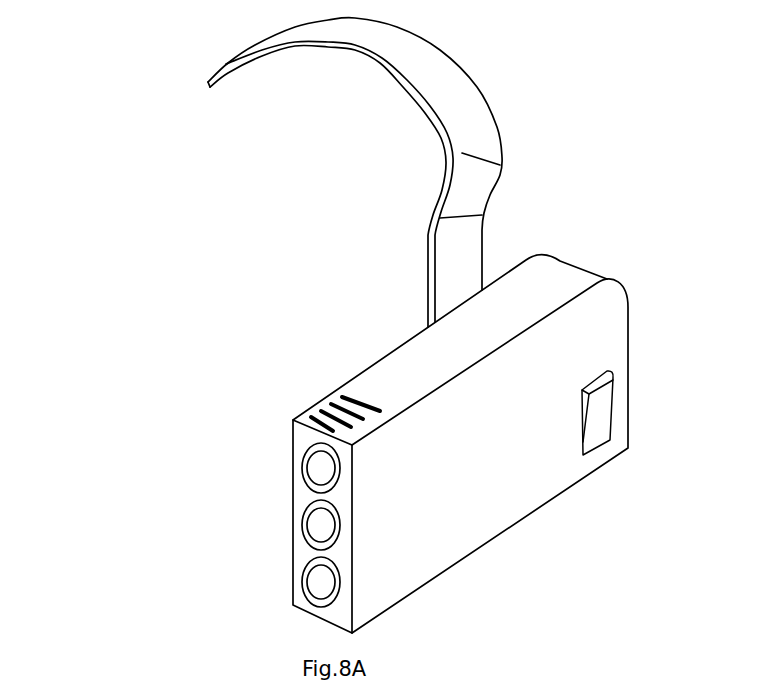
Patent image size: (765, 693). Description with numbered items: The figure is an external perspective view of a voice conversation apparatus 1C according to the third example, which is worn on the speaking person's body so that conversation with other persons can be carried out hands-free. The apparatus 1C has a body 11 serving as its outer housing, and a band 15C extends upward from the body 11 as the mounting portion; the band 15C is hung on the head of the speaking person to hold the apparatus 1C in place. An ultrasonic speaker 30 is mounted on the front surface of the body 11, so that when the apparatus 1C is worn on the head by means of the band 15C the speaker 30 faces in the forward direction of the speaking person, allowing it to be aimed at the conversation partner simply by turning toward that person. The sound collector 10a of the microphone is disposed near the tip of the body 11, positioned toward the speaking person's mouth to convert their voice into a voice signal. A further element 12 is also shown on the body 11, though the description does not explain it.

The voice conversation apparatus 1C is at (190, 157).
The band 15C is at (450, 95).
The body 11 is at (468, 493).
The sound collector 10a is at (332, 412).
The ultrasonic speaker 30 is at (299, 532).
The switch 12 is at (600, 418).